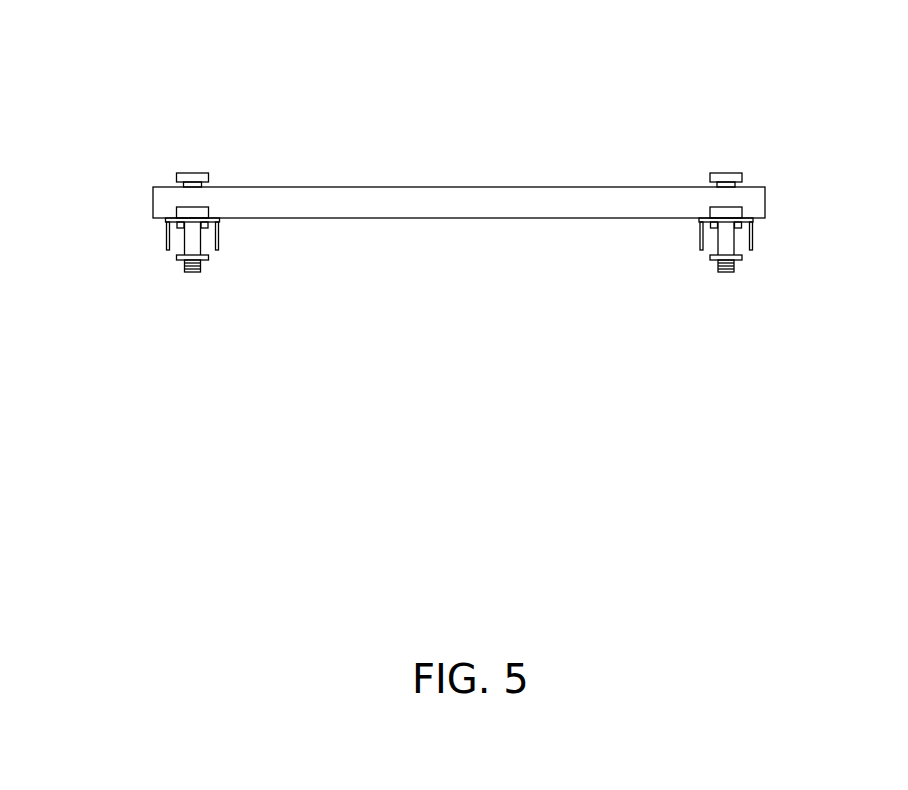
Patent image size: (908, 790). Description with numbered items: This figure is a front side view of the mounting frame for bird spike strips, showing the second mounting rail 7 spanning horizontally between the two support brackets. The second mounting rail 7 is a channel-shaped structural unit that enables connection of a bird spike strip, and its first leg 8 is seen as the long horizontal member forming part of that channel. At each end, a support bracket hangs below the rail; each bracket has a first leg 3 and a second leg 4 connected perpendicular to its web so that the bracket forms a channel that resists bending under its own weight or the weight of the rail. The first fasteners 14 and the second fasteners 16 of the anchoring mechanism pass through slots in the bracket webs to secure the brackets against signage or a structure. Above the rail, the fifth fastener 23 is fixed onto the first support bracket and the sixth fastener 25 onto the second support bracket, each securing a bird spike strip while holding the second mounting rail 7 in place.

The first leg 3 is at (167, 233).
The second leg 4 is at (218, 238).
The second mounting rail 7 is at (590, 233).
The first leg 8 is at (435, 202).
The first fasteners 14 is at (191, 215).
The second fasteners 16 is at (727, 215).
The fifth fastener 23 is at (192, 173).
The sixth fastener 25 is at (727, 173).